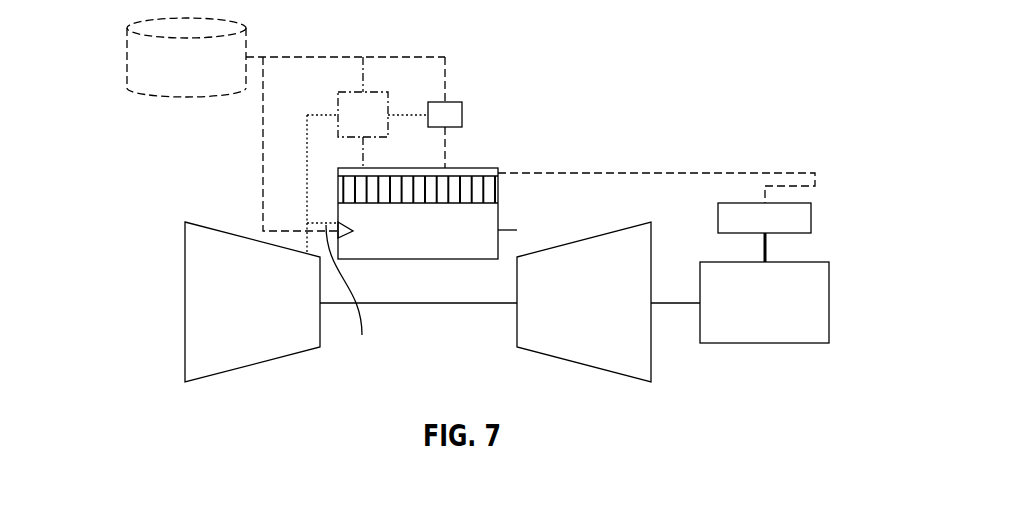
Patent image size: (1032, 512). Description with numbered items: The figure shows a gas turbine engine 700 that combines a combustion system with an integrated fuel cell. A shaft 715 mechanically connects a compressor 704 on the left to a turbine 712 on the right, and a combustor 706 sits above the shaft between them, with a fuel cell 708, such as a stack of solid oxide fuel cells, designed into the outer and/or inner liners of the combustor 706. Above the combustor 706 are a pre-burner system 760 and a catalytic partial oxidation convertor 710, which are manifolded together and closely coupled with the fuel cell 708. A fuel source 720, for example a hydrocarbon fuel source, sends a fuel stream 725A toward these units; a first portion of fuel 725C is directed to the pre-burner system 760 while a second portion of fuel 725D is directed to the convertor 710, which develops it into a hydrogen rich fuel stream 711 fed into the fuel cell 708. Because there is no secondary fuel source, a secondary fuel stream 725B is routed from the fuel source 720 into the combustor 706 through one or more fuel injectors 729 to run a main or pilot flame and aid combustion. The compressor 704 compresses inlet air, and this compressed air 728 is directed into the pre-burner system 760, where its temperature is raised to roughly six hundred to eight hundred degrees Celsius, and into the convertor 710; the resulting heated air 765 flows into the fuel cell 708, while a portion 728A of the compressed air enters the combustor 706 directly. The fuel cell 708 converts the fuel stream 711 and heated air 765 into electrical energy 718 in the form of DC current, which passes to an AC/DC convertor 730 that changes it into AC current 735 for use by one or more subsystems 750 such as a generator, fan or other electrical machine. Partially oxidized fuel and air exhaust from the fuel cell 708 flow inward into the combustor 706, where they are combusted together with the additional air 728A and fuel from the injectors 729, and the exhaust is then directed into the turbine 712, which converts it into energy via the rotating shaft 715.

The gas turbine engine 700 is at (817, 70).
The compressor 704 is at (253, 367).
The combustor 706 is at (500, 218).
The fuel cell 708 is at (493, 185).
The catalytic partial oxidation (C-POX) convertor 710 is at (453, 102).
The hydrogen rich fuel stream 711 is at (447, 148).
The turbine 712 is at (580, 365).
The shaft 715 is at (447, 303).
The electrical energy 718 is at (725, 172).
The fuel source 720 is at (127, 52).
The fuel stream 725A is at (282, 57).
The secondary fuel stream 725B is at (263, 215).
The first portion of fuel 725C is at (365, 82).
The second portion of fuel 725D is at (447, 75).
The compressed air 728 is at (307, 170).
The portion of compressed air 728A is at (357, 295).
The fuel injector 729 is at (352, 236).
The AC/DC convertor 730 is at (811, 211).
The AC current 735 is at (763, 250).
The subsystem 750 is at (800, 262).
The pre-burner system 760 is at (377, 100).
The heated air 765 is at (365, 157).